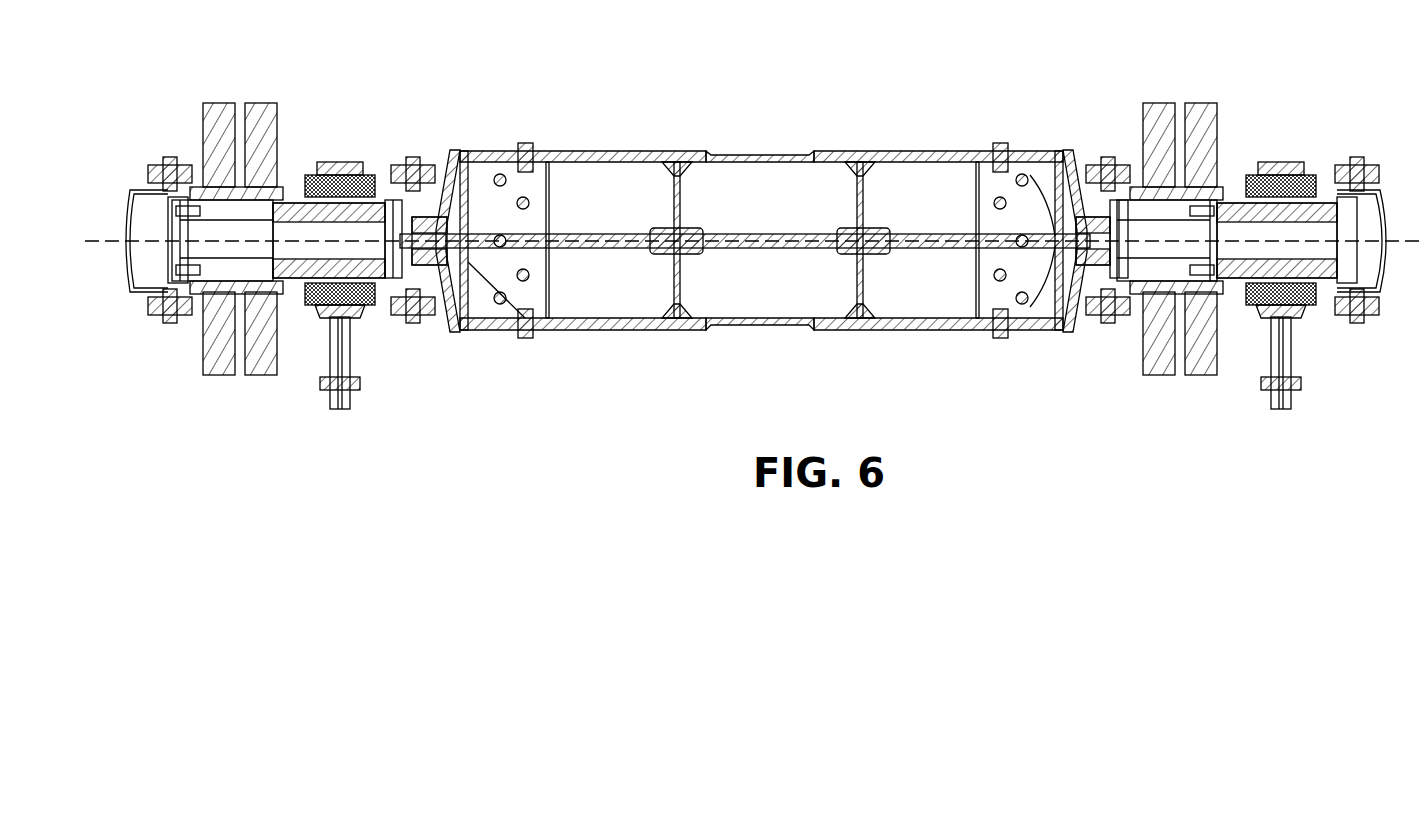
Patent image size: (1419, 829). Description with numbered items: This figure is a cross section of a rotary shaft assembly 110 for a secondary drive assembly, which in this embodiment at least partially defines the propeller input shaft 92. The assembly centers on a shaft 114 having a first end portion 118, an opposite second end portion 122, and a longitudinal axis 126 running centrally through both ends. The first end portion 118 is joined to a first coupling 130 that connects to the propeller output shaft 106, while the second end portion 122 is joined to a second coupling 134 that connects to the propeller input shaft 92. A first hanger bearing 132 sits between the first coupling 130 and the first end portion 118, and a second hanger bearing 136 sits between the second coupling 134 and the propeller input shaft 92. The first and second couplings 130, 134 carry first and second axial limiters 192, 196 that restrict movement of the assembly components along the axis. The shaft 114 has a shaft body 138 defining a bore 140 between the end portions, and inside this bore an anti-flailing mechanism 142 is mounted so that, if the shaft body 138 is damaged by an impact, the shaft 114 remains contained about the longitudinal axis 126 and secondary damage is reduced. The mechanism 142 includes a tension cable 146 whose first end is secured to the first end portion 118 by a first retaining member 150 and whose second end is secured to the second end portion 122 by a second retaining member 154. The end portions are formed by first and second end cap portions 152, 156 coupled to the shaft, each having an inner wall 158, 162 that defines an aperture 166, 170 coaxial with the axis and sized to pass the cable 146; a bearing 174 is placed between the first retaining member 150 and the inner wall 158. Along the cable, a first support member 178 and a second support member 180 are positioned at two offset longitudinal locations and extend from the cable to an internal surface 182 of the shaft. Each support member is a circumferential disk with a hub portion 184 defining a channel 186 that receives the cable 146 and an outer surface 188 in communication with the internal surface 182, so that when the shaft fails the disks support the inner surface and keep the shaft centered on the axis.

The propeller input shaft 92 is at (1383, 292).
The propeller output shaft 106 is at (125, 292).
The rotary shaft assembly 110 is at (897, 76).
The shaft 114 is at (573, 180).
The first end portion 118 is at (443, 186).
The second end portion 122 is at (1070, 190).
The longitudinal axis 126 is at (118, 236).
The first coupling 130 is at (273, 130).
The first hanger bearing 132 is at (333, 163).
The second coupling 134 is at (1200, 130).
The second hanger bearing 136 is at (1276, 163).
The shaft body 138 is at (700, 151).
The bore 140 is at (617, 176).
The anti-flailing mechanism 142 is at (752, 268).
The cable 146 is at (745, 232).
The first retaining member 150 is at (416, 302).
The first end cap portion 152 is at (522, 150).
The second retaining member 154 is at (1068, 322).
The second end cap portion 156 is at (1003, 195).
The inner wall 158 is at (472, 322).
The inner wall 162 is at (1000, 332).
The aperture 166 is at (530, 330).
The aperture 170 is at (1024, 172).
The bearing 174 is at (440, 268).
The first support member 178 is at (712, 326).
The second support member 180 is at (900, 328).
The internal surface 182 is at (897, 164).
The hub portion 184 is at (660, 252).
The channel 186 is at (847, 228).
The outer surface 188 is at (675, 328).
The first axial limiter 192 is at (247, 260).
The second axial limiter 196 is at (1150, 266).